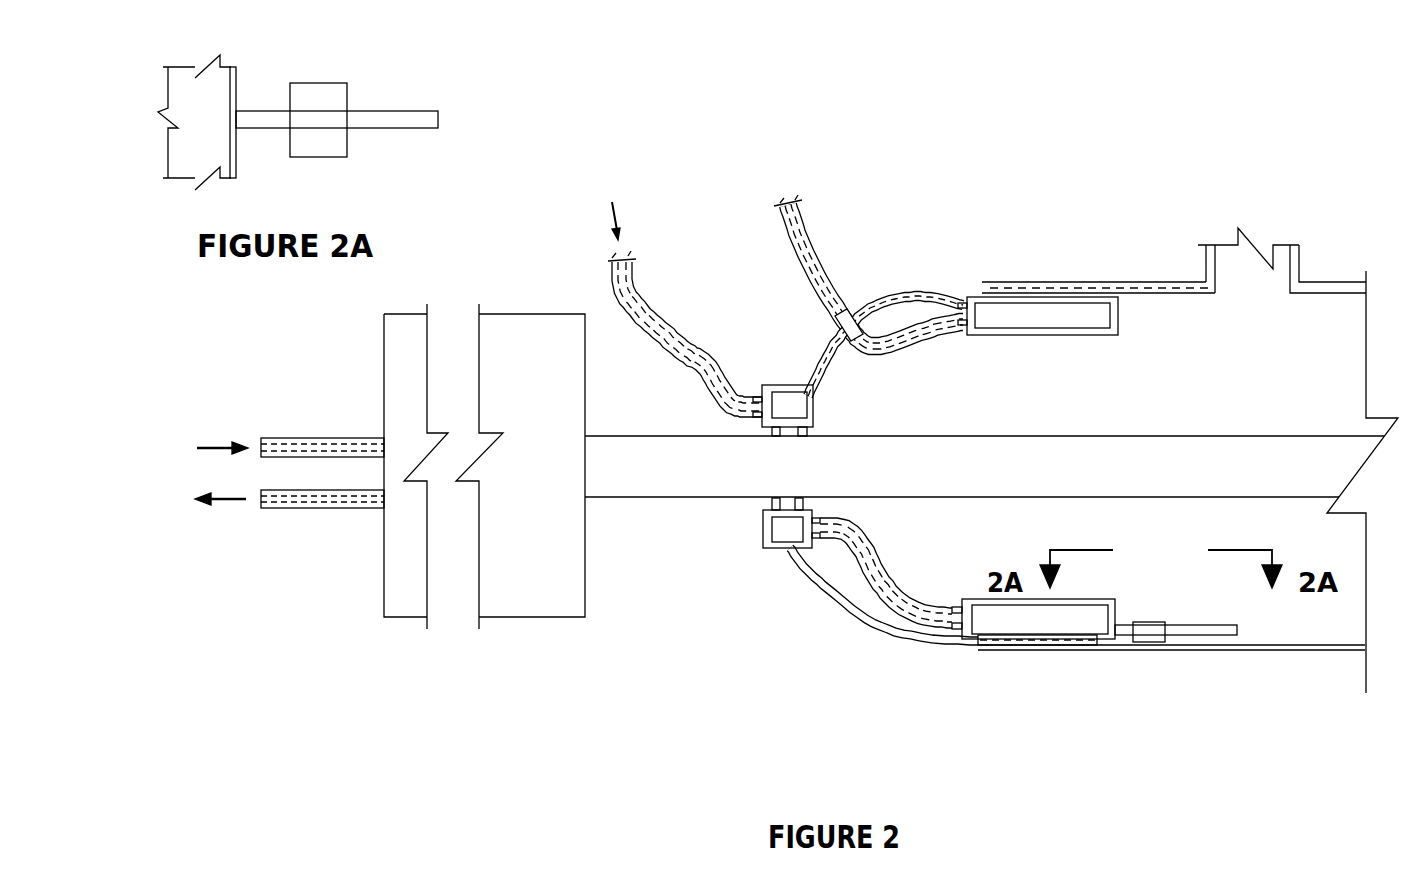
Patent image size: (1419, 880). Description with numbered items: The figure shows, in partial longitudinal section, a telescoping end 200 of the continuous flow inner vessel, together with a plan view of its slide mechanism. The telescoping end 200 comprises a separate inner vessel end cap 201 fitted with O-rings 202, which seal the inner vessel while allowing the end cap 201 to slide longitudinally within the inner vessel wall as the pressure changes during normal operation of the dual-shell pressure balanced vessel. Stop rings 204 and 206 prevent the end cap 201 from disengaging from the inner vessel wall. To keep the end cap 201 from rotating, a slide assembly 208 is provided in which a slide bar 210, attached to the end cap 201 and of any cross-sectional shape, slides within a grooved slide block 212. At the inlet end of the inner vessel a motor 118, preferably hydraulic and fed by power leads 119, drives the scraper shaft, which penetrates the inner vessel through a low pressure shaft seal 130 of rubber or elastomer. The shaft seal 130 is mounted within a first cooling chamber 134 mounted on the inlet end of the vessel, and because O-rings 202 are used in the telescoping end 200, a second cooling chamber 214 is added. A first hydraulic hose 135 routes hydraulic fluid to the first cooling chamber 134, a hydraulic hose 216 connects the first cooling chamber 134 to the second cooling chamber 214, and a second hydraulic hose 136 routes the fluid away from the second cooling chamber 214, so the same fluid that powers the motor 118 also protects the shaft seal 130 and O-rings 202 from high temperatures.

In FIG. 2, the motor 118 is at (559, 619).
In FIG. 2, the power leads 119 is at (333, 508).
In FIG. 2, the shaft seal 130 is at (793, 430).
In FIG. 2, the first cooling chamber 134 is at (765, 552).
In FIG. 2, the first hydraulic hose 135 is at (670, 323).
In FIG. 2, the second hydraulic hose 136 is at (798, 250).
In FIG. 2, the telescoping end 200 is at (1063, 240).
In FIG. 2, the inner vessel end cap 201 is at (958, 295).
In FIG. 2, the O-rings 202 is at (1093, 648).
In FIG. 2, the stop ring 204 is at (980, 637).
In FIG. 2, the stop ring 206 is at (1010, 653).
In FIG. 2A, the slide assembly 208 is at (378, 73).
In FIG. 2, the slide assembly 208 is at (1160, 590).
In FIG. 2A, the slide bar 210 is at (408, 131).
In FIG. 2A, the grooved slide block 212 is at (343, 157).
In FIG. 2, the second cooling chamber 214 is at (1120, 308).
In FIG. 2, the hydraulic hose 216 is at (888, 603).